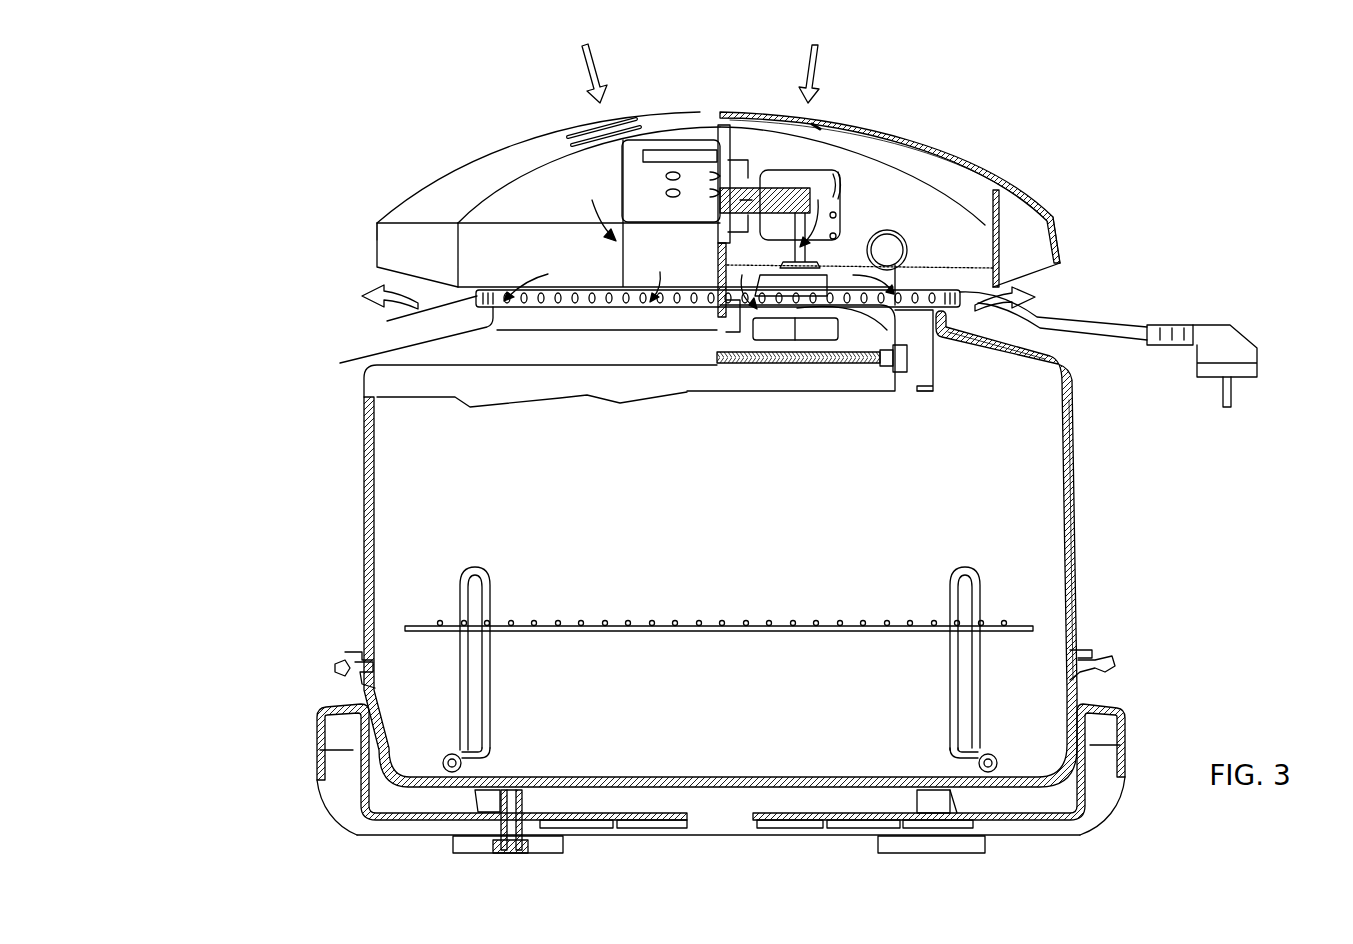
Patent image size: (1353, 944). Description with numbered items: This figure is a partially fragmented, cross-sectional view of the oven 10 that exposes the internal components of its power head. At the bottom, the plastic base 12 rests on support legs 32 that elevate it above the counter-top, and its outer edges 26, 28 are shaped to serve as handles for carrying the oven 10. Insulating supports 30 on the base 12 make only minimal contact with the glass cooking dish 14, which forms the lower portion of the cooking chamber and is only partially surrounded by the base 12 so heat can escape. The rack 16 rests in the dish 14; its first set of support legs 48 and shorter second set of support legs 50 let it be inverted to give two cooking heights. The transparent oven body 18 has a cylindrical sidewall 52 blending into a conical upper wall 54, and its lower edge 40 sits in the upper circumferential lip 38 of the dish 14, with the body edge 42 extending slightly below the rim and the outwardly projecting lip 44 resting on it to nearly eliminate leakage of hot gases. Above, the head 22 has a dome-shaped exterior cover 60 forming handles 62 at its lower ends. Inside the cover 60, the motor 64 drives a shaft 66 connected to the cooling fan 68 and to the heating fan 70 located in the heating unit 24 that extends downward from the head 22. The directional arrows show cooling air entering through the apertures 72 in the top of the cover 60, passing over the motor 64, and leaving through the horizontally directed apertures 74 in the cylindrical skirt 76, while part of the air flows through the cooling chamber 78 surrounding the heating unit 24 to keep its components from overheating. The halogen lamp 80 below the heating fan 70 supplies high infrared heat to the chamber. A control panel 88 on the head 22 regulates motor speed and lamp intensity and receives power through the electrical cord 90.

The oven 10 is at (312, 190).
The base 12 is at (700, 785).
The glass cooking dish 14 is at (697, 783).
The rack 16 is at (660, 616).
The oven body 18 is at (364, 513).
The head 22 is at (950, 150).
The heating unit 24 is at (938, 406).
The outer edge of the base 26 is at (1105, 800).
The outer edge of the base 28 is at (343, 812).
The supports 30 is at (915, 787).
The support legs 32 is at (460, 843).
The upper circumferential lip 38 is at (1108, 657).
The lower edge 40 is at (1088, 652).
The body edge 42 is at (378, 668).
The outwardly projecting lip 44 is at (345, 650).
The first set of support legs 48 is at (485, 707).
The second set of support legs 50 is at (491, 575).
The cylindrical sidewall 52 is at (1077, 482).
The conical-shaped upper wall 54 is at (1003, 355).
The exterior cover 60 is at (1028, 197).
The handles 62 is at (377, 242).
The motor 64 is at (785, 197).
The shaft 66 is at (733, 332).
The first cooling fan 68 is at (818, 288).
The heating fan 70 is at (787, 337).
The apertures 72 is at (598, 122).
The apertures 74 is at (340, 365).
The skirt 76 is at (417, 306).
The cooling chamber 78 is at (920, 345).
The halogen lamp 80 is at (727, 365).
The control panel 88 is at (628, 179).
The electrical cord 90 is at (1085, 320).